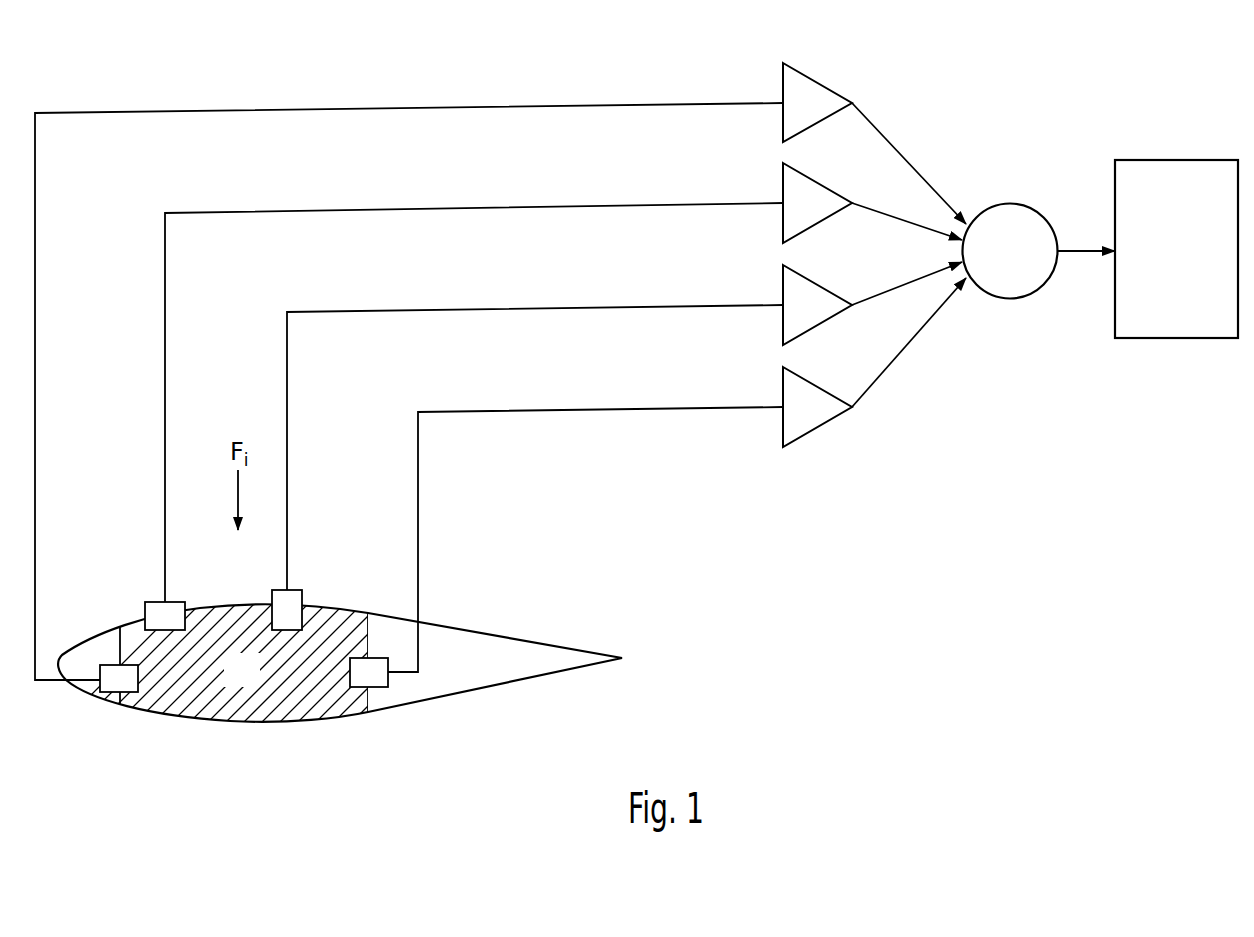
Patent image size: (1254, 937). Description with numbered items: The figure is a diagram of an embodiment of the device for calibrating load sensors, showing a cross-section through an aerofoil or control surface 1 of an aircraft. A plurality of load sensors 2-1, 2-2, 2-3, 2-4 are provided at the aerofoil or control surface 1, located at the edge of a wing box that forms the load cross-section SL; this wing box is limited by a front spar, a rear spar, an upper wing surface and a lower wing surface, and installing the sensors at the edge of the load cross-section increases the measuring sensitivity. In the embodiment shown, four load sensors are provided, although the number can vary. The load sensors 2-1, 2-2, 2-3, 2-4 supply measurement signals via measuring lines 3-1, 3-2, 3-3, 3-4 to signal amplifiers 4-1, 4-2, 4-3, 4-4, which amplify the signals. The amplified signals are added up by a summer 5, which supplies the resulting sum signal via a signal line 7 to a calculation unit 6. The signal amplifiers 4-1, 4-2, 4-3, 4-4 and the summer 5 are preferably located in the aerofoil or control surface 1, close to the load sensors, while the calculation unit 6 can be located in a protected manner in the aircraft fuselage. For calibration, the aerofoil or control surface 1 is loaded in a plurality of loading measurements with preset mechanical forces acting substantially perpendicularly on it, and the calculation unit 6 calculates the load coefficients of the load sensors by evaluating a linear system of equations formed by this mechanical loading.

The aerofoil or control surface 1 is at (503, 690).
The load sensor 2-1 is at (110, 693).
The load sensor 2-2 is at (176, 601).
The load sensor 2-3 is at (300, 590).
The load sensor 2-4 is at (380, 688).
The measuring line 3-1 is at (568, 104).
The measuring line 3-2 is at (568, 205).
The measuring line 3-3 is at (568, 306).
The measuring line 3-4 is at (568, 407).
The signal amplifier 4-1 is at (810, 97).
The signal amplifier 4-2 is at (810, 197).
The signal amplifier 4-3 is at (810, 298).
The signal amplifier 4-4 is at (810, 400).
The summer 5 is at (1010, 203).
The calculation unit 6 is at (1175, 160).
The signal line 7 is at (1077, 250).